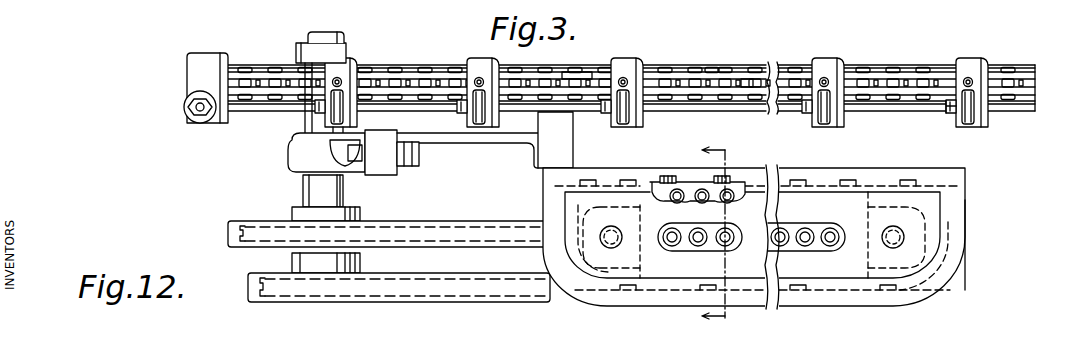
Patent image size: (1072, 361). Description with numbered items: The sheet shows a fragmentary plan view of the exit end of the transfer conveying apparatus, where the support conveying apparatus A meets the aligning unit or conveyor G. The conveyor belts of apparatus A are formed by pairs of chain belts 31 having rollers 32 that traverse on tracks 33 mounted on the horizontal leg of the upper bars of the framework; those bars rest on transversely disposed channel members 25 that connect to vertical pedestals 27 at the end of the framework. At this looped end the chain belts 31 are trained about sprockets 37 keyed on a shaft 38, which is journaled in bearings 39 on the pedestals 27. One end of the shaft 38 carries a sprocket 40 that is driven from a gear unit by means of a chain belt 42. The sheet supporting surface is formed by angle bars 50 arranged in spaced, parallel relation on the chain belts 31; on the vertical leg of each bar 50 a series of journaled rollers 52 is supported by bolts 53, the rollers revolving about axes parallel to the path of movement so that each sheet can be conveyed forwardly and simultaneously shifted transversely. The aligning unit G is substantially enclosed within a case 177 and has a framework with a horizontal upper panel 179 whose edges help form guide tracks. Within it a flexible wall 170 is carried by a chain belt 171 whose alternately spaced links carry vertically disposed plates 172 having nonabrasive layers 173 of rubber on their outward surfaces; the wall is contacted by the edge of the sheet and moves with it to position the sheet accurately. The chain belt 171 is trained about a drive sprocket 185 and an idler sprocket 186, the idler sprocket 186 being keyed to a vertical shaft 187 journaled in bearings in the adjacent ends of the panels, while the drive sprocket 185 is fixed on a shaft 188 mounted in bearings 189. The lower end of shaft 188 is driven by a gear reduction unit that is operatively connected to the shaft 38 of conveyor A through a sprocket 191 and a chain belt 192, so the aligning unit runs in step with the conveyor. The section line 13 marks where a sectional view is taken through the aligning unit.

In FIG. 3, the support conveying apparatus A is at (863, 62).
In FIG. 12, the aligning unit G is at (847, 163).
In FIG. 12, the section line 13- 13 is at (746, 153).
In FIG. 3, the channel members 25 is at (556, 143).
In FIG. 3, the pedestals 27 is at (448, 138).
In FIG. 3, the chain belts 31 is at (568, 76).
In FIG. 3, the rollers 32 is at (712, 72).
In FIG. 3, the tracks 33 is at (745, 72).
In FIG. 3, the sprockets 37 is at (336, 52).
In FIG. 3, the shaft 38 is at (325, 38).
In FIG. 3, the bearings 39 is at (300, 156).
In FIG. 3, the sprocket 40 is at (312, 212).
In FIG. 3, the chain belt 42 is at (410, 224).
In FIG. 3, the angle bars 50 is at (200, 65).
In FIG. 3, the rollers 52 is at (186, 101).
In FIG. 3, the bolts 53 is at (948, 112).
In FIG. 12, the flexible wall 170 is at (739, 176).
In FIG. 12, the chain belt 171 is at (751, 228).
In FIG. 12, the plates 172 is at (676, 181).
In FIG. 12, the nonabrasive layers 173 is at (666, 176).
In FIG. 12, the case 177 is at (975, 241).
In FIG. 12, the upper panel 179 is at (880, 285).
In FIG. 12, the drive sprocket 185 is at (562, 216).
In FIG. 12, the idler sprocket 186 is at (962, 214).
In FIG. 12, the vertical shaft 187 is at (938, 247).
In FIG. 12, the shaft 188 is at (620, 243).
In FIG. 12, the bearings 189 is at (612, 192).
In FIG. 3, the sprocket 191 is at (306, 263).
In FIG. 3, the chain belt 192 is at (418, 276).